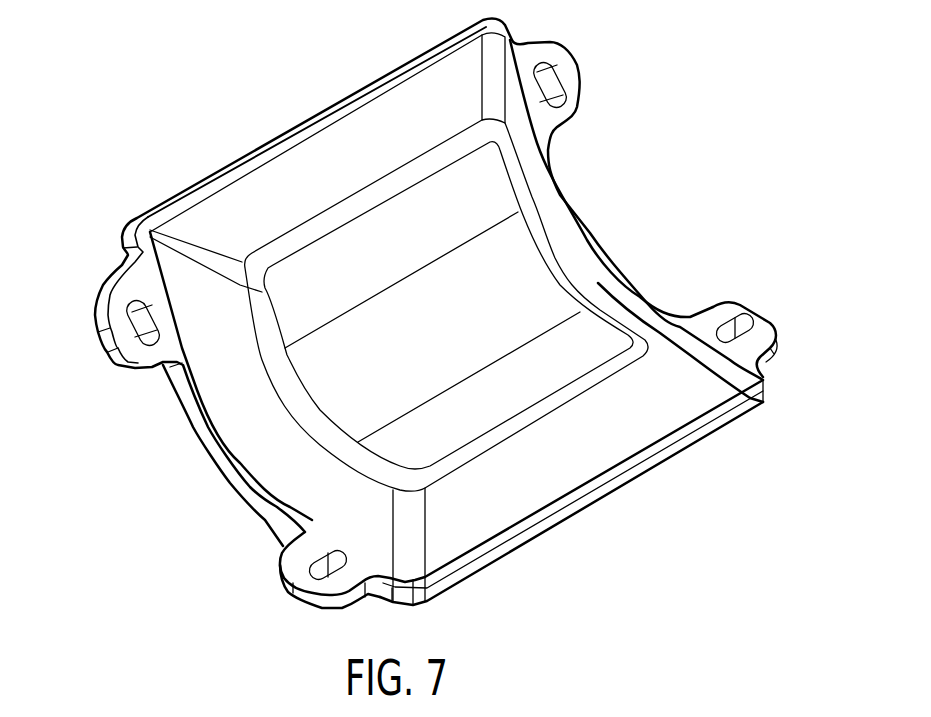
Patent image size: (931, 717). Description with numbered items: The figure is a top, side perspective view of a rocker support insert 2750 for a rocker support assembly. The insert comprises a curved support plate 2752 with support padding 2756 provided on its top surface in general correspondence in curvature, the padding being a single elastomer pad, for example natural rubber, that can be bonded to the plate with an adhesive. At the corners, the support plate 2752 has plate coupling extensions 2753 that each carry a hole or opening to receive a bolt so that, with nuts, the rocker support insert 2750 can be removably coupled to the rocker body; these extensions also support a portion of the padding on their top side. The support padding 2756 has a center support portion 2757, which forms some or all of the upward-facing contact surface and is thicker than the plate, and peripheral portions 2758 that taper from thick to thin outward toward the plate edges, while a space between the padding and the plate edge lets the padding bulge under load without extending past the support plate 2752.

The rocker support insert 2750 is at (228, 144).
The support plate 2752 is at (587, 495).
The plate coupling extensions 2753 is at (552, 52).
The support padding 2756 is at (552, 263).
The center support portion 2757 is at (527, 310).
The peripheral portions 2758 is at (348, 128).